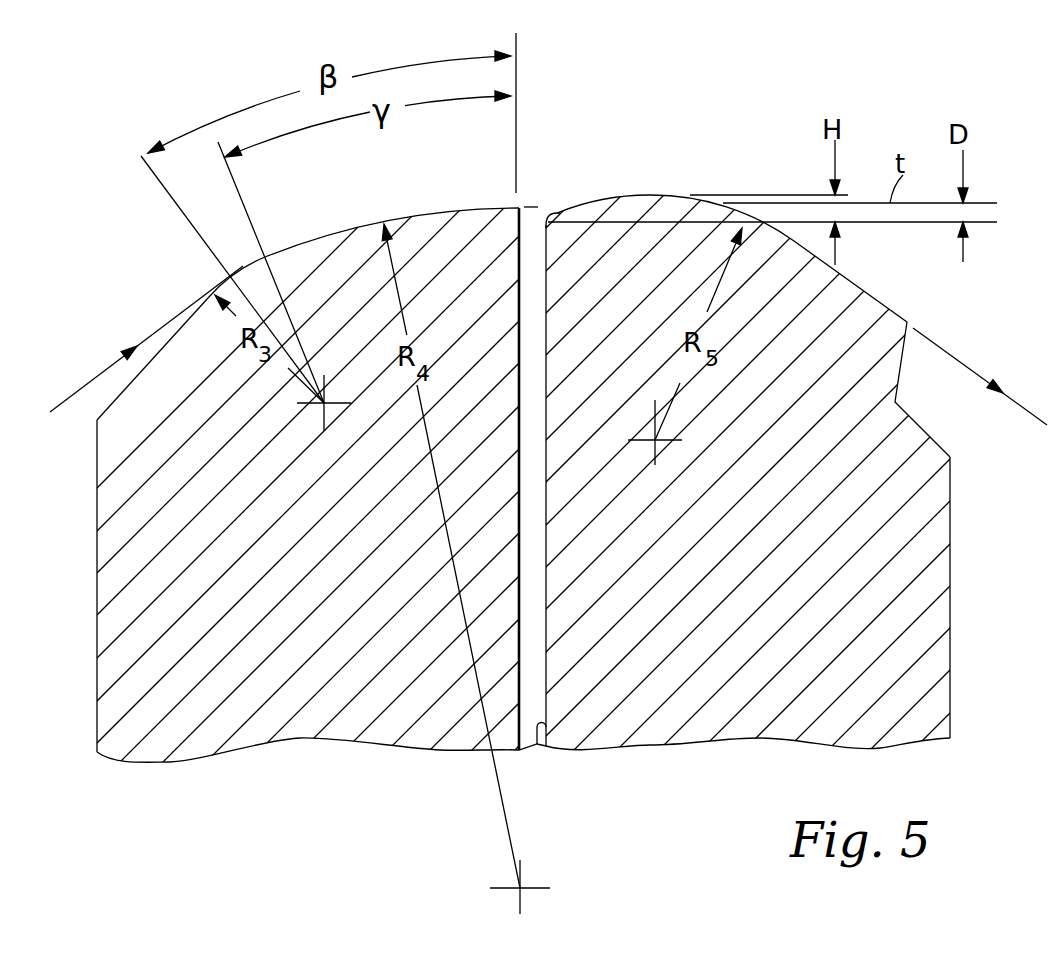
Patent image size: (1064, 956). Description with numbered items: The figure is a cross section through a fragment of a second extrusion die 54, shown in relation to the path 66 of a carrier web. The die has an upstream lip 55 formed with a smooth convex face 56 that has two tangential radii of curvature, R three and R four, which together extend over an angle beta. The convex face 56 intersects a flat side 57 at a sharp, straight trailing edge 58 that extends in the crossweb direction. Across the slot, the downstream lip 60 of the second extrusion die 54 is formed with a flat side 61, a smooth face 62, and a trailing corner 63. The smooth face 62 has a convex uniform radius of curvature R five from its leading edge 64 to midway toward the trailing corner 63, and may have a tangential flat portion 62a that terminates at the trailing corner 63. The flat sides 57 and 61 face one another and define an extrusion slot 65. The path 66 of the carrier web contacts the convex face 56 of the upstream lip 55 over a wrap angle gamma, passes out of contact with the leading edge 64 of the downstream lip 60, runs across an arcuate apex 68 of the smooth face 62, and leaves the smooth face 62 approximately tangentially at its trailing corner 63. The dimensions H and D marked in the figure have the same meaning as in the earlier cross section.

The second extrusion die 54 is at (300, 822).
The upstream lip 55 is at (96, 512).
The smooth convex face 56 is at (340, 228).
The flat side 57 is at (520, 600).
The trailing edge 58 is at (520, 204).
The downstream lip 60 is at (951, 487).
The flat side 61 is at (536, 745).
The smooth face 62 is at (722, 205).
The tangential flat portion 62a is at (853, 280).
The trailing corner 63 is at (910, 322).
The leading edge 64 is at (542, 213).
The extrusion slot 65 is at (538, 652).
The path of a carrier web 66 is at (82, 384).
The arcuate apex 68 is at (649, 198).